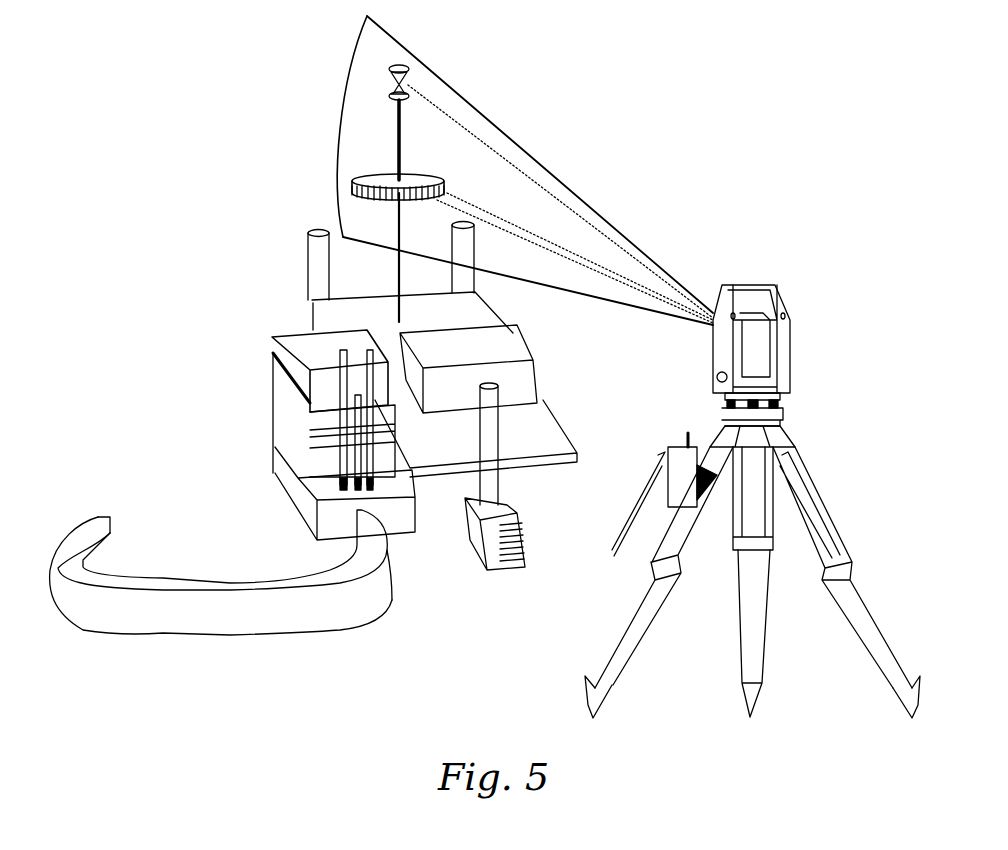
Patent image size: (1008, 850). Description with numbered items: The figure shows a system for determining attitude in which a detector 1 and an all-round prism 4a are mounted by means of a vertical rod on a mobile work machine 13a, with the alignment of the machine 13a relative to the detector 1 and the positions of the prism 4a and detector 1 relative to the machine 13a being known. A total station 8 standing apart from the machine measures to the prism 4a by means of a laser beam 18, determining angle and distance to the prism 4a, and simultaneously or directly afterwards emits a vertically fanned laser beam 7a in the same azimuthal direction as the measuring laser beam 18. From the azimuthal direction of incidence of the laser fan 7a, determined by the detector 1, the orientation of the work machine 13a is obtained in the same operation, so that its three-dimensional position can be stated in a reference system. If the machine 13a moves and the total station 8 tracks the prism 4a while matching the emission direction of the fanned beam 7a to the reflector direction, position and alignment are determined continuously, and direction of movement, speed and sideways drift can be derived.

The detector 1 is at (350, 182).
The all-round prism 4a is at (407, 77).
The laser beam 18 is at (538, 185).
The vertically fanned laser beam 7a is at (623, 310).
The mobile work machine 13a is at (207, 342).
The total station 8 is at (818, 282).